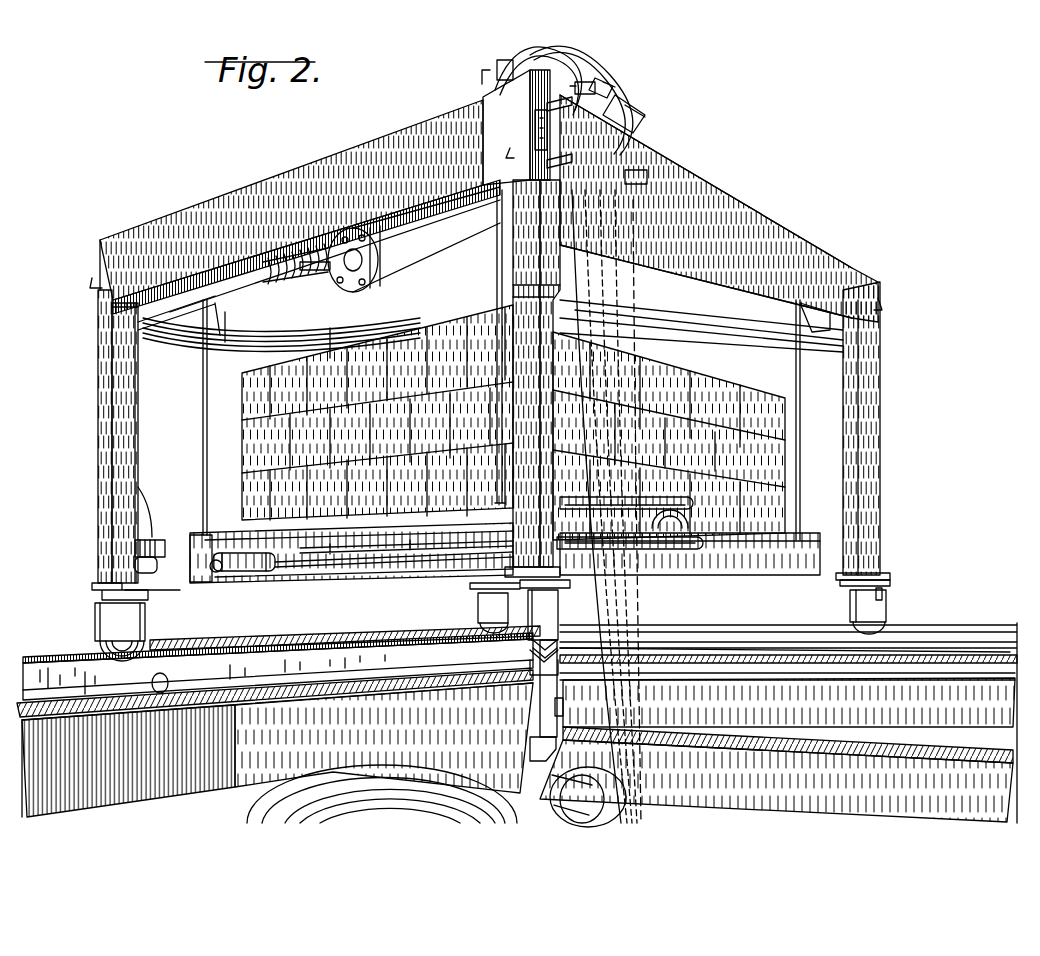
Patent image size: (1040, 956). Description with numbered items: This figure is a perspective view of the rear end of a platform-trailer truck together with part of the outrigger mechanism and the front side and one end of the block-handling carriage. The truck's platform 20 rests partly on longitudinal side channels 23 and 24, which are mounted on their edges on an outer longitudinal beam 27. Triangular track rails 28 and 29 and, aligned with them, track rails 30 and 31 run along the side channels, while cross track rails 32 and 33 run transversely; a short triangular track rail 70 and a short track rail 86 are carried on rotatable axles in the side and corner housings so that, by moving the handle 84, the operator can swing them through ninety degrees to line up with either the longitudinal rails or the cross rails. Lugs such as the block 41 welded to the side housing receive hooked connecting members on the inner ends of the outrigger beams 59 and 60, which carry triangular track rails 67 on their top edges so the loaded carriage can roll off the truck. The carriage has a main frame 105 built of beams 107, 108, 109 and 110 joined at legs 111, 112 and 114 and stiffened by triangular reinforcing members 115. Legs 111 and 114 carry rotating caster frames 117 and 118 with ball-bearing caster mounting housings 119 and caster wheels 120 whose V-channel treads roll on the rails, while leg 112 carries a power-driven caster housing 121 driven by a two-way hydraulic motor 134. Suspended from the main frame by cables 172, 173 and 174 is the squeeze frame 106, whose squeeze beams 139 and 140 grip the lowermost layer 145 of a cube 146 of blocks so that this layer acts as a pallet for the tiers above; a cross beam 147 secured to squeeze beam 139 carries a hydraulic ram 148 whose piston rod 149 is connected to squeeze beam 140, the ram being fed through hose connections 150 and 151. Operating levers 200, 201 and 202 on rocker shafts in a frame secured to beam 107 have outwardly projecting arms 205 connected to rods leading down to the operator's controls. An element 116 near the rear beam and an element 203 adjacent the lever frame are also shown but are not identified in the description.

The platform bottom 20 is at (904, 630).
The longitudinal side channel 23 is at (749, 718).
The longitudinal side channel 24 is at (195, 677).
The outer longitudinal beam 27 is at (705, 789).
The track rail 28 is at (802, 684).
The track rail 29 is at (952, 622).
The track rail 30 is at (264, 696).
The track rail 31 is at (681, 627).
The cross track rail 32 is at (767, 630).
The cross track rail 33 is at (240, 640).
The block 41 is at (564, 702).
The outrigger beam 59 is at (312, 762).
The outrigger beam 60 is at (278, 669).
The track rail 67 is at (30, 656).
The short triangular track rail 70 is at (548, 675).
The handle 84 is at (556, 753).
The short track rail 86 is at (143, 682).
The main frame 105 is at (816, 229).
The squeeze frame 106 is at (724, 574).
The beam 107 is at (720, 186).
The beam 108 is at (290, 174).
The beam 109 is at (245, 335).
The beam 110 is at (727, 345).
The leg 111 is at (534, 478).
The leg 112 is at (98, 479).
The leg 114 is at (878, 444).
The triangular shaped reinforcing member 115 is at (92, 284).
The gusset 116 is at (760, 335).
The rotating caster frame 117 is at (548, 688).
The rotating caster frame 118 is at (890, 608).
The ball bearing caster mounting housing 119 is at (92, 591).
The caster wheel 120 is at (141, 638).
The housing 121 is at (143, 623).
The two-way hydraulic motor 134 is at (173, 593).
The squeeze beam 139 is at (700, 569).
The squeeze beam 140 is at (200, 537).
The lowermost layer 145 is at (713, 535).
The cube 146 is at (354, 450).
The cross beam 147 is at (402, 576).
The hydraulic ram 148 is at (250, 576).
The piston rod 149 is at (214, 572).
The hose connection 150 is at (330, 576).
The hose connection 151 is at (350, 530).
The cable 172 is at (798, 390).
The cable 173 is at (497, 287).
The cable 174 is at (203, 432).
The operating lever 200 is at (635, 115).
The operating lever 201 is at (614, 96).
The operating lever 202 is at (604, 77).
The bracket 203 is at (536, 125).
The outwardly projecting arm 205 is at (546, 105).